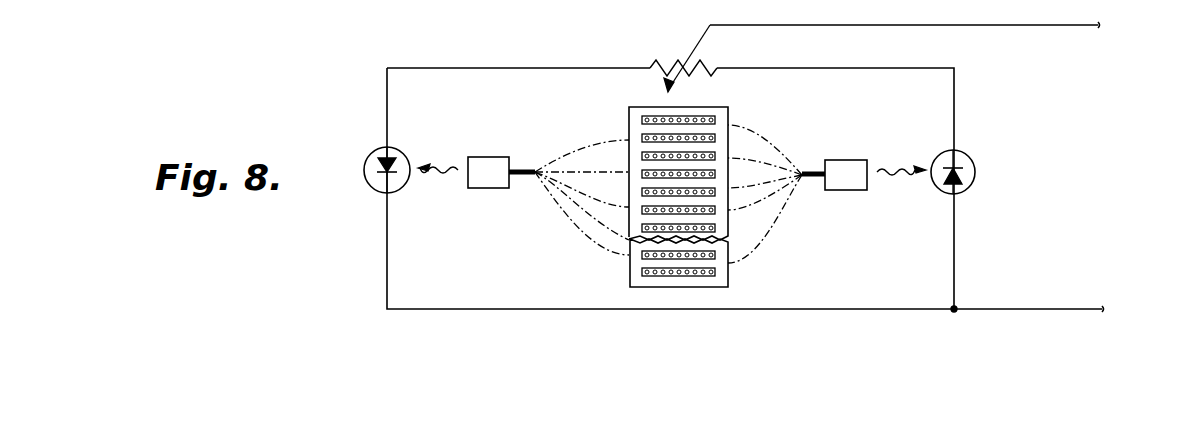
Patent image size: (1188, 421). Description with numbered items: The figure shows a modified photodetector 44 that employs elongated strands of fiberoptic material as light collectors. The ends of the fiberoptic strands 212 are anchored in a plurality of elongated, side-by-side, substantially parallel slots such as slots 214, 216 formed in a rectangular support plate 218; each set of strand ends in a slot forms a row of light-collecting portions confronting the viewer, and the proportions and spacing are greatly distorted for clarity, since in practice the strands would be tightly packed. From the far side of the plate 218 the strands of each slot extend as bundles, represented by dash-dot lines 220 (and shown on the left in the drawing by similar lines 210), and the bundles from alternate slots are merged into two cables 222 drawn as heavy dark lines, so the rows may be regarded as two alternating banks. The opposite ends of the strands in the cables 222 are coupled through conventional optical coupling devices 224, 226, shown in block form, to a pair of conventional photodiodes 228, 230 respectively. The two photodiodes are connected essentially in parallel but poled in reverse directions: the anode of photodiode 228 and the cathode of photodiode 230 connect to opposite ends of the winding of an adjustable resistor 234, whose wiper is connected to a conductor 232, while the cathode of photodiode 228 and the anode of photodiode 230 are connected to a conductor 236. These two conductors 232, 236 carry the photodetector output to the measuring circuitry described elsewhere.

The photodetector 44 is at (639, 192).
The optical fibers (left bundle) 210 is at (580, 207).
The ends of fiberoptic strands 212 is at (718, 121).
The slot 214 is at (648, 117).
The slot 216 is at (645, 137).
The support plate 218 is at (662, 283).
The bundles 220 is at (792, 214).
The cables 222 is at (522, 162).
The optical coupling device 224 is at (481, 157).
The optical coupling device 226 is at (850, 160).
The photodiode 228 is at (367, 186).
The photodiode 230 is at (975, 182).
The conductor 232 is at (955, 25).
The adjustable resistor 234 is at (668, 58).
The conductor 236 is at (800, 309).